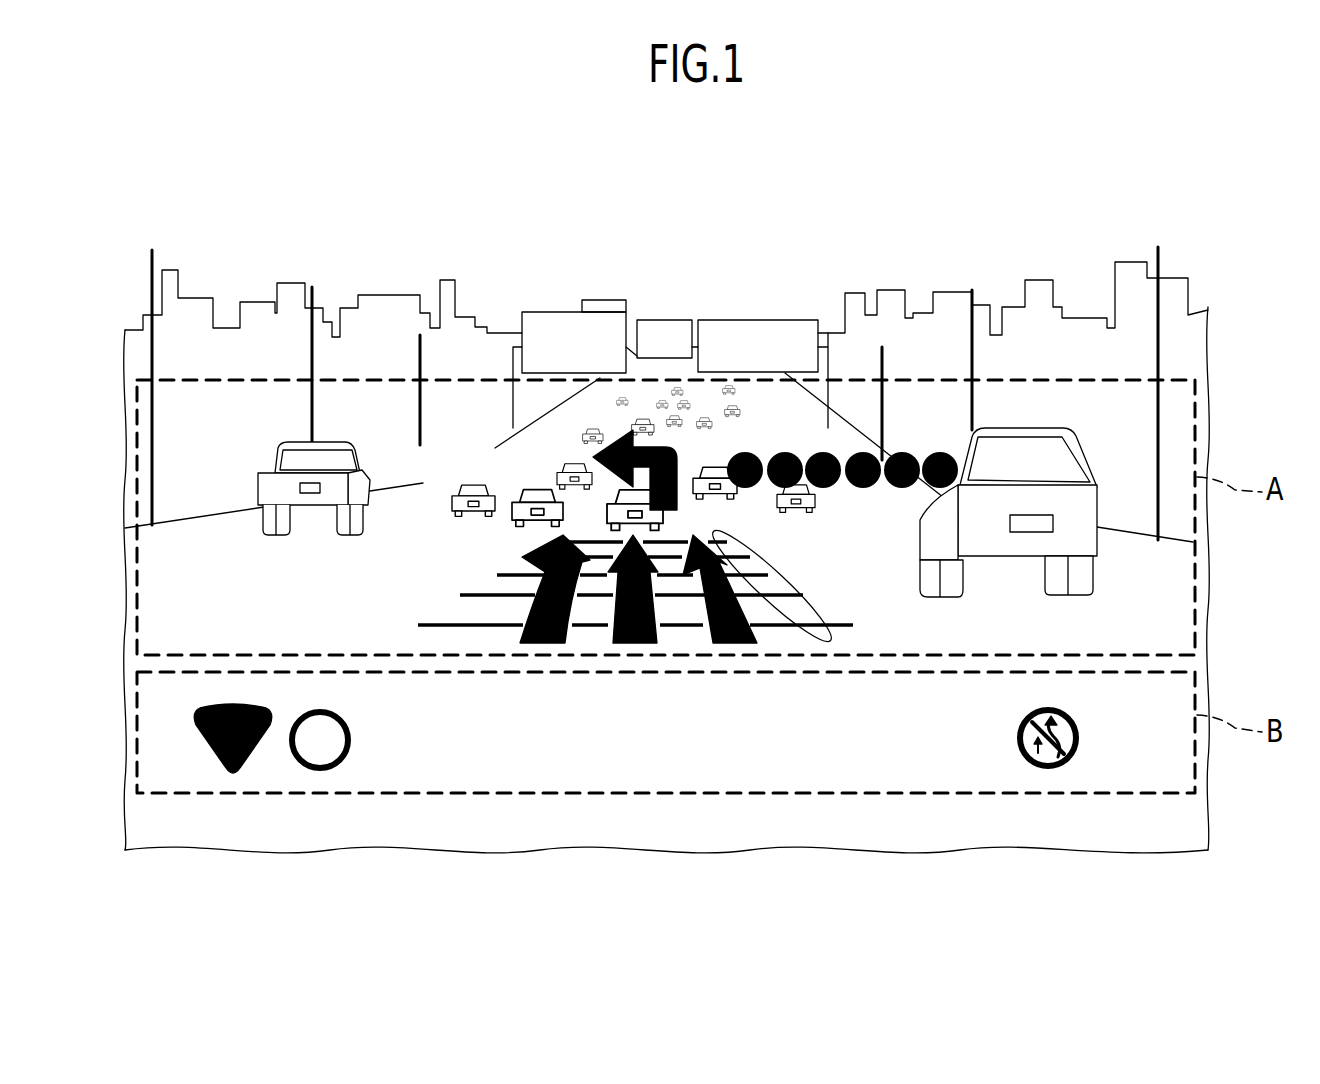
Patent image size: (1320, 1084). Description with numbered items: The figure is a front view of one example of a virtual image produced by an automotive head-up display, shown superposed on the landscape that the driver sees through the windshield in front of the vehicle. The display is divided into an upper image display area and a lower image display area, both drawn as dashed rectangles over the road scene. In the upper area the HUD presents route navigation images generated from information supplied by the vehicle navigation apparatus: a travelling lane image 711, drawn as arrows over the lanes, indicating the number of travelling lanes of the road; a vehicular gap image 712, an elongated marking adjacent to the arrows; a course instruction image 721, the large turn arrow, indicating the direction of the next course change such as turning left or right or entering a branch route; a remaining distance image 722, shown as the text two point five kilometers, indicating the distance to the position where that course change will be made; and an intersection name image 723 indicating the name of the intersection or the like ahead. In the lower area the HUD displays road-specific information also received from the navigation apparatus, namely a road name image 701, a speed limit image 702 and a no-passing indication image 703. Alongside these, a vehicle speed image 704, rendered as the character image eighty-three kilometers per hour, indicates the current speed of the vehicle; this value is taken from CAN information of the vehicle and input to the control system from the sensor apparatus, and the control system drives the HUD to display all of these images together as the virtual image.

The road name image 701 is at (233, 775).
The speed limit image 702 is at (320, 775).
The no-passing indication image 703 is at (1043, 780).
The vehicle speed image 704 is at (706, 779).
The travelling lane image 711 is at (710, 640).
The vehicular gap image 712 is at (828, 641).
The course instruction image 721 is at (657, 431).
The remaining distance image 722 is at (480, 434).
The intersection name image 723 is at (907, 433).